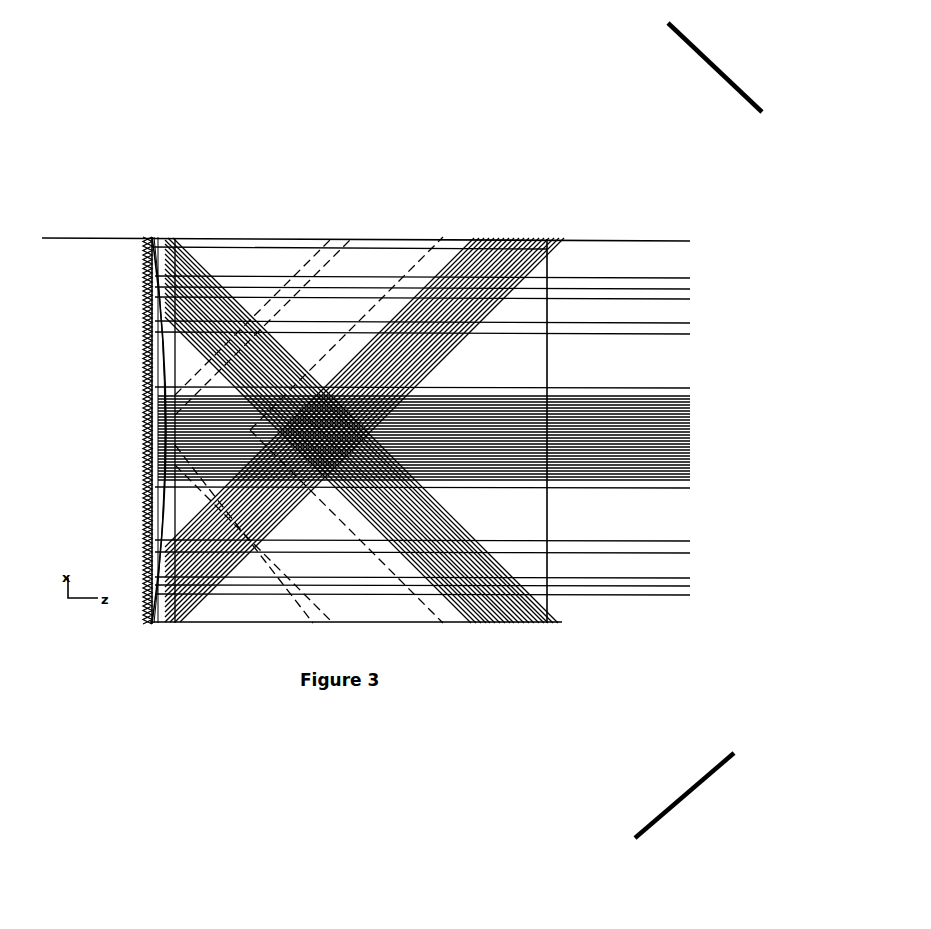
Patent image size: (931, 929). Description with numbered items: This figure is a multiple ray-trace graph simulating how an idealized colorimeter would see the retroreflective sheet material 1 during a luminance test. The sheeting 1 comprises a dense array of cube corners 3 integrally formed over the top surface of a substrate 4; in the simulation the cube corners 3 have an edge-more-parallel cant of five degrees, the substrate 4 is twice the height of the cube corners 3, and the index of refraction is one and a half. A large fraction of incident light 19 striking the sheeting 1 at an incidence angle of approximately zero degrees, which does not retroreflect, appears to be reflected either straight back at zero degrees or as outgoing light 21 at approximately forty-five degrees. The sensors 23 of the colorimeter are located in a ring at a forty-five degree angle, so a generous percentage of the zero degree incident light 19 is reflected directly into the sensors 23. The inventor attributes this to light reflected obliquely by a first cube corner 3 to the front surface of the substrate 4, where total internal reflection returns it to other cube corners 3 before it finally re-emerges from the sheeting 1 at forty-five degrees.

The retroreflective sheet material 1 is at (144, 415).
The cube corners 3 is at (150, 237).
The substrate 4 is at (170, 238).
The incident light 19 is at (690, 386).
The outgoing light 21 is at (560, 232).
The sensors 23 is at (563, 206).